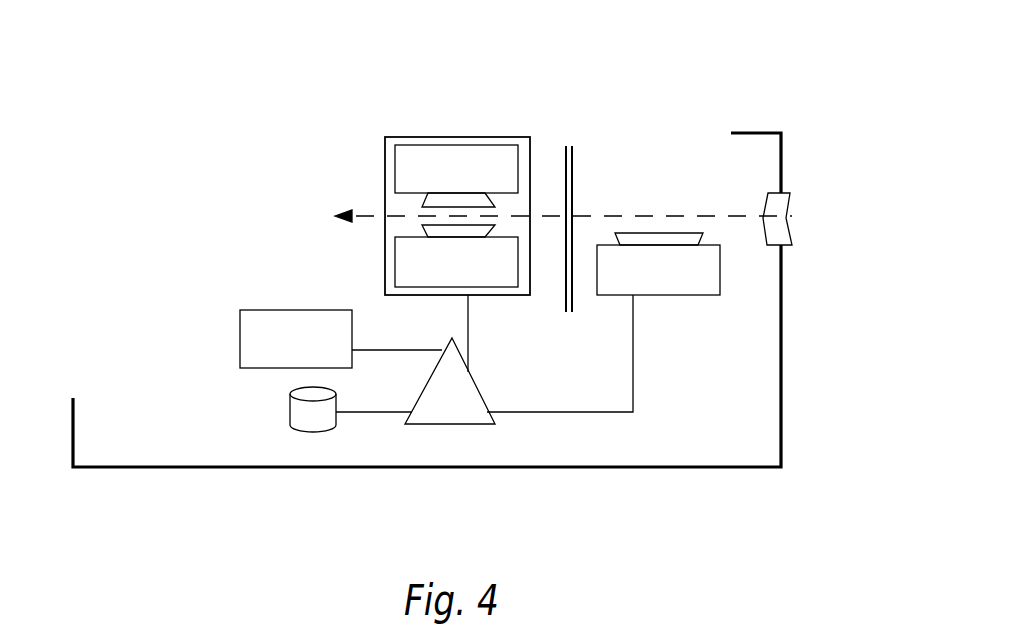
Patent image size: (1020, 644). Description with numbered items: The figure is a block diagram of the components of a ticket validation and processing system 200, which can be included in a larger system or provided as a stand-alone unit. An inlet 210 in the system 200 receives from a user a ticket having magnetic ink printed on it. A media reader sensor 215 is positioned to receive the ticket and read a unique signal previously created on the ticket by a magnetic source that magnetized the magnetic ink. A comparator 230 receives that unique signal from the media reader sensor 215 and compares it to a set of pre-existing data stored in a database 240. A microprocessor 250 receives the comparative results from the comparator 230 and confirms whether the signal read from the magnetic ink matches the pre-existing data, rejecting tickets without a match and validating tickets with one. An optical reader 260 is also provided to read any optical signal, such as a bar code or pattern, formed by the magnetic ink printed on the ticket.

The ticket validation and processing system 200 is at (733, 112).
The inlet 210 is at (790, 205).
The media reader sensor 215 is at (692, 296).
The comparator 230 is at (476, 425).
The database 240 is at (310, 432).
The microprocessor 250 is at (310, 310).
The optical reader 260 is at (468, 137).